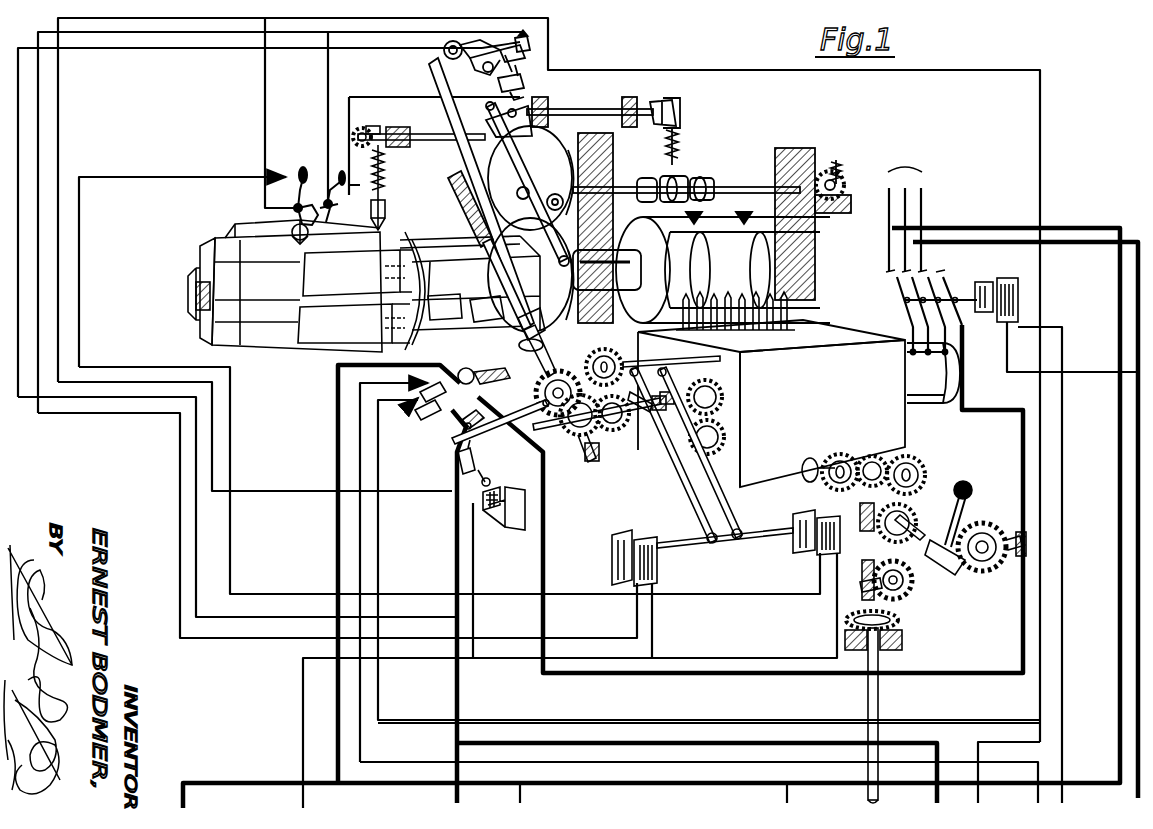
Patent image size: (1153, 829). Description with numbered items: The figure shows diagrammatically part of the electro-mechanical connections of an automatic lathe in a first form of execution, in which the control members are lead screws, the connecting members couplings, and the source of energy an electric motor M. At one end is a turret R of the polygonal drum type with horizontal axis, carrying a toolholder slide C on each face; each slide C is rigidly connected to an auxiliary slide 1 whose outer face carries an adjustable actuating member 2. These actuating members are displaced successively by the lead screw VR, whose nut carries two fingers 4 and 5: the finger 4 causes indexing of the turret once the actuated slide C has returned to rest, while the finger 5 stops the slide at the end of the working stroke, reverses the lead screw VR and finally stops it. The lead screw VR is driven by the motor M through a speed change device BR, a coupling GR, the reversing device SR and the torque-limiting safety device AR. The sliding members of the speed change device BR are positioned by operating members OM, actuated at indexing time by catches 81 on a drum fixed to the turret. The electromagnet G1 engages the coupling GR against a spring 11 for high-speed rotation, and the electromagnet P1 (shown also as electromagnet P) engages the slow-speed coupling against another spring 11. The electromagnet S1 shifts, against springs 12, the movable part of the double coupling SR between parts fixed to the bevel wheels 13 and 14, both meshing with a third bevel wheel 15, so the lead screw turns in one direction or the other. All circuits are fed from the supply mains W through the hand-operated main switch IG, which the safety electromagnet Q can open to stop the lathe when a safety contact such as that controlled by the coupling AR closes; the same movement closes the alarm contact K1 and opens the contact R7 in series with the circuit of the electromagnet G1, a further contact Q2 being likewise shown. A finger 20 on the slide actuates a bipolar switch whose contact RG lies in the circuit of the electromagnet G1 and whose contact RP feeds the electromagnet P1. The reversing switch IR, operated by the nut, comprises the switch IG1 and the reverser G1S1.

The turret R is at (250, 326).
The toolholder slide C is at (349, 296).
The finger 20 is at (292, 232).
The contact RP is at (292, 206).
The contact RG is at (345, 200).
The reverser G1S1 is at (448, 40).
The reversing switch IR is at (520, 44).
The switch IG1 is at (526, 84).
The finger 4 is at (560, 272).
The finger 5 is at (470, 210).
The lead screw VR is at (440, 198).
The catches 81 is at (723, 267).
The supply mains W is at (905, 154).
The operating members OM is at (762, 325).
The speed change device BR is at (771, 403).
The motor M is at (933, 373).
The main switch IG is at (950, 284).
The safety electromagnet Q is at (1022, 296).
The electromagnet P is at (673, 405).
The coupling GR is at (662, 420).
The safety device AR is at (545, 342).
The bevel wheel 13 is at (594, 367).
The reversing device SR is at (540, 400).
The bevel wheel 14 is at (574, 437).
The bevel wheel 15 is at (614, 430).
The contact K1 is at (430, 375).
The contacts Q2 is at (418, 410).
The contact R7 is at (500, 422).
The springs 12 is at (452, 455).
The electromagnet S1 is at (526, 492).
The electromagnet G1 is at (656, 570).
The spring 11 is at (730, 545).
The electromagnet P1 is at (822, 557).
The auxiliary slide 1 is at (487, 311).
The actuating member 2 is at (445, 312).